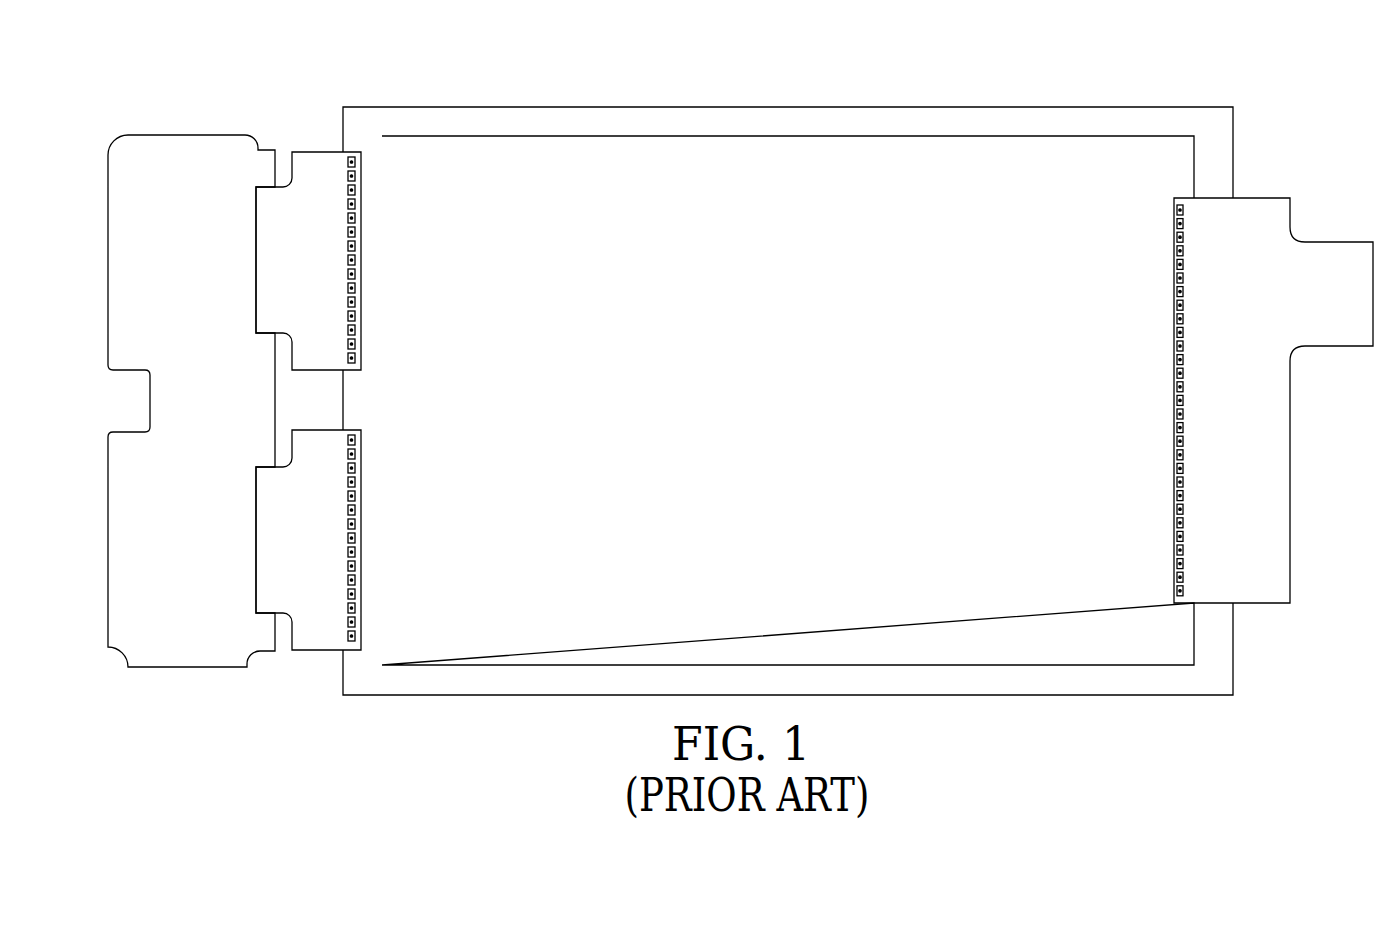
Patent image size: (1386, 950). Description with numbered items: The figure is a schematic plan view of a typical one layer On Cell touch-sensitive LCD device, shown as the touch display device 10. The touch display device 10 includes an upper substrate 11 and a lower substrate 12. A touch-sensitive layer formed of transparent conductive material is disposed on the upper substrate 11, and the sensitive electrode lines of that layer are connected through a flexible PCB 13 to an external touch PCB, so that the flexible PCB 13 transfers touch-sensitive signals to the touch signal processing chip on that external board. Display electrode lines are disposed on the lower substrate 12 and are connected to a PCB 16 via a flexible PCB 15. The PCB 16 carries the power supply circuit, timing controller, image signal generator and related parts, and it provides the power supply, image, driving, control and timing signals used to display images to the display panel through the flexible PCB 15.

The touch display device 10 is at (701, 52).
The upper substrate 11 is at (396, 165).
The lower substrate 12 is at (367, 672).
The flexible PCB 13 is at (1263, 235).
The flexible PCB 15 is at (313, 172).
The PCB 16 is at (188, 165).